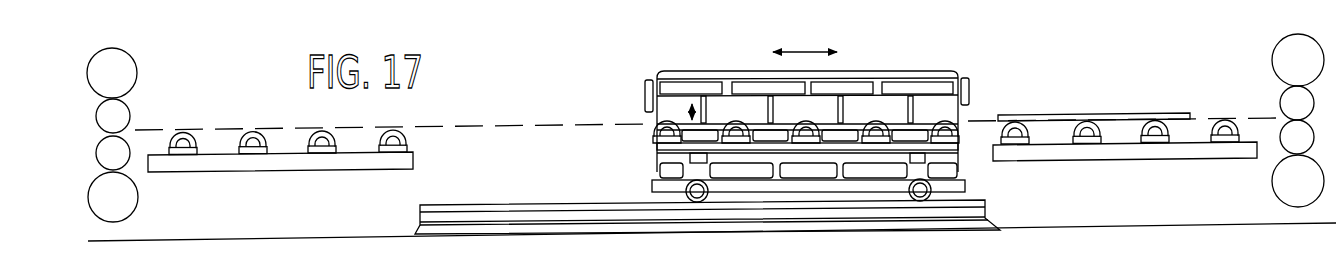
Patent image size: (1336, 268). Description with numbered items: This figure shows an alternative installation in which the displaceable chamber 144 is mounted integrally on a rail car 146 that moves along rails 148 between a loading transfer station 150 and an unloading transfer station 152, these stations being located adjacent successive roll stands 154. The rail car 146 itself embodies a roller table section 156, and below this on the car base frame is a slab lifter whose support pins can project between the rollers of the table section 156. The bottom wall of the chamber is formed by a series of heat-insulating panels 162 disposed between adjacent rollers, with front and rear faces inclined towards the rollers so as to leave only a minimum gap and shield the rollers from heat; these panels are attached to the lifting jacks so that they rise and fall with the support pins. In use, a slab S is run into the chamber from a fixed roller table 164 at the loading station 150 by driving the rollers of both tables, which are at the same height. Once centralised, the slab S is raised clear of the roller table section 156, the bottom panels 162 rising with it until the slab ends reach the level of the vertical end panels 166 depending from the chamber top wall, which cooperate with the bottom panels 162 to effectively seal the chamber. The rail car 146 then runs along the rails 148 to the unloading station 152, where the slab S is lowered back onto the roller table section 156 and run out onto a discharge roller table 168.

The displaceable chamber 144 is at (620, 78).
The rail car 146 is at (883, 183).
The rails 148 is at (548, 208).
The loading transfer station 150 is at (1107, 68).
The unloading transfer station 152 is at (245, 87).
The roll stands 154 is at (129, 200).
The roller table section 156 is at (730, 123).
The heat-insulating panels 162 is at (765, 125).
The fixed roller table 164 is at (1225, 137).
The vertical end panels 166 is at (970, 83).
The discharge roller table 168 is at (320, 148).
The slab S is at (1121, 115).